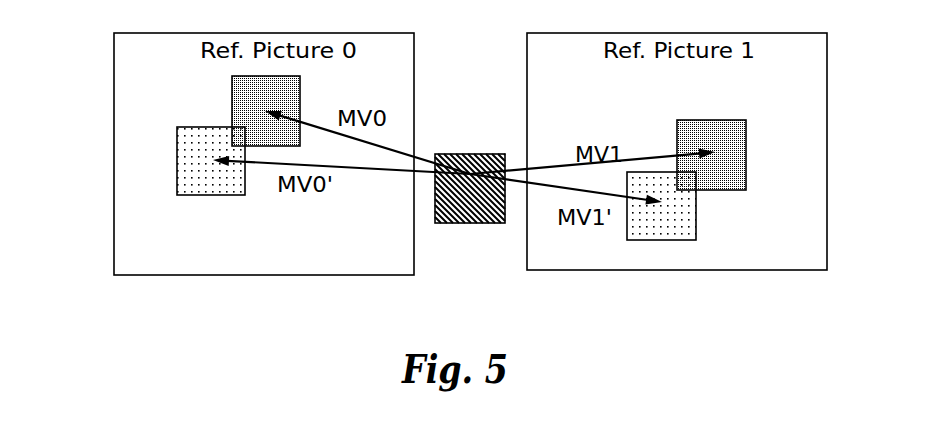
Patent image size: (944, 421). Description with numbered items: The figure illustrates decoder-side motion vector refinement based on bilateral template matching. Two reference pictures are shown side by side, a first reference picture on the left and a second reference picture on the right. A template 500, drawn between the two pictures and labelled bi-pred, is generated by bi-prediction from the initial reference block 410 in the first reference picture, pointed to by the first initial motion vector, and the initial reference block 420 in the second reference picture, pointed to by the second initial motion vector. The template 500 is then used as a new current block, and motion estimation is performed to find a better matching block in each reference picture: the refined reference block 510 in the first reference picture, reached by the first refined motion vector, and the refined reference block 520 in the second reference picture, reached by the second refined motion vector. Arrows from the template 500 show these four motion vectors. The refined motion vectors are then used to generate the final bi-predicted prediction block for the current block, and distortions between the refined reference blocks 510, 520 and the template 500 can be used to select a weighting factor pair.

The reference block 410 is at (232, 97).
The reference block 420 is at (746, 145).
The template 500 is at (472, 154).
The refined reference block 510 is at (177, 160).
The refined reference block 520 is at (696, 218).